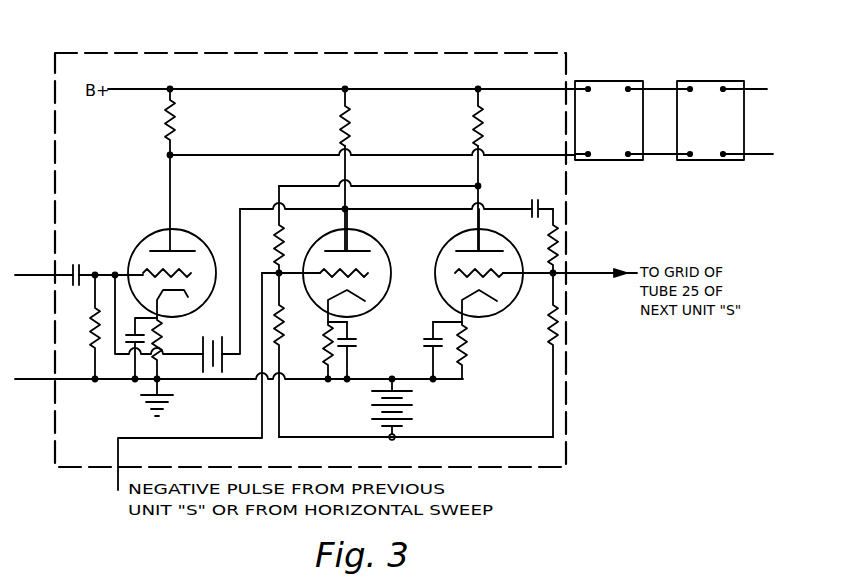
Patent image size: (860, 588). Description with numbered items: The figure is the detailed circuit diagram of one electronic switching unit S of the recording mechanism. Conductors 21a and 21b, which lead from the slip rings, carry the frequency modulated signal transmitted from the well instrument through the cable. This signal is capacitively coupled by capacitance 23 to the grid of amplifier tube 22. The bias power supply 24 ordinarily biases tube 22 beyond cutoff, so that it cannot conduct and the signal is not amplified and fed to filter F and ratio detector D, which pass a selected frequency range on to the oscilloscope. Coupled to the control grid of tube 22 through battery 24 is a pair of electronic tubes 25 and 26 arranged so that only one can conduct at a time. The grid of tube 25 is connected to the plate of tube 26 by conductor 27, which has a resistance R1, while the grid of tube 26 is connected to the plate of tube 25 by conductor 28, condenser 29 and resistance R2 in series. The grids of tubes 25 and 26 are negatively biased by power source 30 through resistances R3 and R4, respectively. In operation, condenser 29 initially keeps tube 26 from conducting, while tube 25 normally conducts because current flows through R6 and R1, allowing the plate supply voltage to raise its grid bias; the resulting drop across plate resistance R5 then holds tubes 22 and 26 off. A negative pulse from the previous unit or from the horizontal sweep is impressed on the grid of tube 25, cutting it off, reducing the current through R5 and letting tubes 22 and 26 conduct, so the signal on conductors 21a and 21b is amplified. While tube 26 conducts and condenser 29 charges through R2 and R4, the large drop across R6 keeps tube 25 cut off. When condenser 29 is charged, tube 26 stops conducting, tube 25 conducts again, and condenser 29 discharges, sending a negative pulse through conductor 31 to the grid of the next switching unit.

The electronic switching unit S is at (361, 53).
The filter F is at (598, 81).
The ratio detector D is at (722, 81).
The conductor 21a is at (44, 265).
The conductor 21b is at (239, 387).
The amplifier tube 22 is at (151, 236).
The capacitance 23 is at (76, 263).
The bias power supply 24 is at (199, 340).
The electronic tube 25 is at (380, 303).
The electronic tube 26 is at (510, 303).
The conductor 27 is at (394, 186).
The conductor 28 is at (382, 210).
The condenser 29 is at (539, 200).
The power source 30 is at (408, 418).
The conductor 31 is at (600, 272).
The resistance R1 is at (269, 229).
The resistance R2 is at (569, 241).
The resistance R3 is at (291, 355).
The resistance R4 is at (569, 355).
The resistance R5 is at (357, 117).
The resistance R6 is at (490, 117).